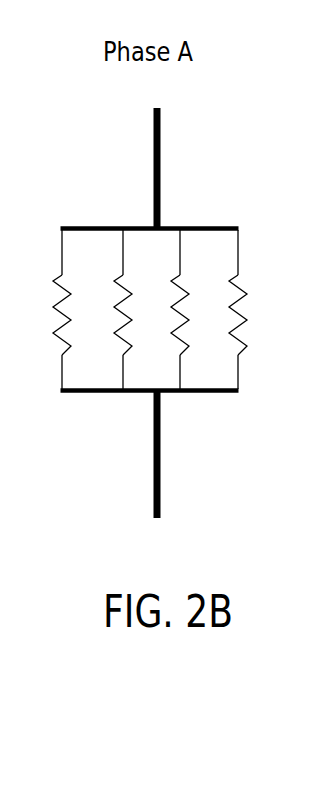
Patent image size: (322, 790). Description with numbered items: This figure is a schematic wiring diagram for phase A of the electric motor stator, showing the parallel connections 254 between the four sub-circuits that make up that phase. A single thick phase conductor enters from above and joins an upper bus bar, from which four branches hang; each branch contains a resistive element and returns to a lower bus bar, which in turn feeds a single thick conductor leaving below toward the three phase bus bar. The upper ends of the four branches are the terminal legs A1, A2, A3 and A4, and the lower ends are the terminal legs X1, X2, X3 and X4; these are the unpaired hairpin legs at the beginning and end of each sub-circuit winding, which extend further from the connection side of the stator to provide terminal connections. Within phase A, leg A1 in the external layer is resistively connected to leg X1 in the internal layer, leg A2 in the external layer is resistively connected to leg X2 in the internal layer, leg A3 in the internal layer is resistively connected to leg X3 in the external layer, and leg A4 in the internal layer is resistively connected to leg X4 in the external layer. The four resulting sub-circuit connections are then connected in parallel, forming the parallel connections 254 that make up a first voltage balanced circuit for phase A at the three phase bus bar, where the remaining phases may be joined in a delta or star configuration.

The parallel connections 254 is at (171, 299).
The leg A1 is at (66, 235).
The leg A2 is at (125, 235).
The leg A3 is at (184, 235).
The leg A4 is at (243, 235).
The leg X1 is at (68, 394).
The leg X2 is at (126, 394).
The leg X3 is at (187, 394).
The leg X4 is at (244, 394).